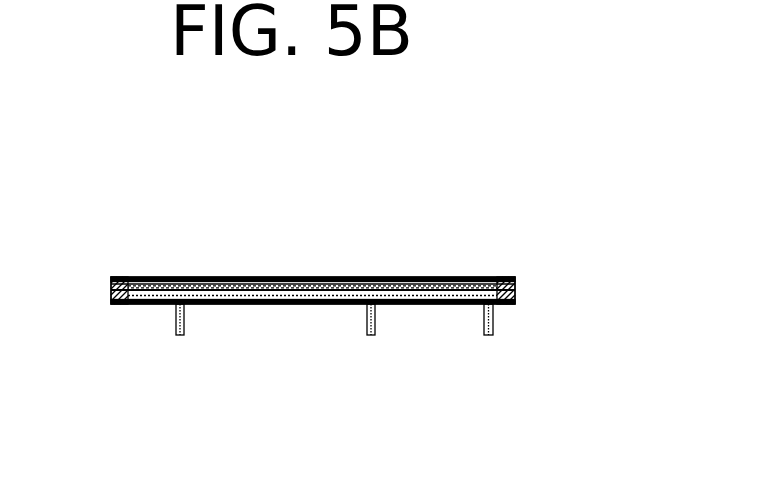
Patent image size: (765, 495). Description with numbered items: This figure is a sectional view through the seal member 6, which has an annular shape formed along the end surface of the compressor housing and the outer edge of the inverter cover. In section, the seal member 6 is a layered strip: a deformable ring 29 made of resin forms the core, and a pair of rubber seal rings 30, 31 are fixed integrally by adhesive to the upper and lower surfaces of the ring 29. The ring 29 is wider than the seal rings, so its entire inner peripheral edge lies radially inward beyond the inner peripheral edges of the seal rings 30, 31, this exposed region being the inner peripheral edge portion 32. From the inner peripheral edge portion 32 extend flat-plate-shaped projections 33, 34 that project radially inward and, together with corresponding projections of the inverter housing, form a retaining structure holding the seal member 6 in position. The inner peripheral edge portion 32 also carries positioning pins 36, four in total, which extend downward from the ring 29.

The seal member 6 is at (288, 238).
The deformable ring 29 is at (516, 285).
The rubber seal ring 30 is at (505, 277).
The rubber seal ring 31 is at (498, 309).
The inner peripheral edge portion 32 is at (144, 277).
The projection 33 is at (198, 277).
The projection 34 is at (437, 277).
The positioning pins 36 is at (484, 318).